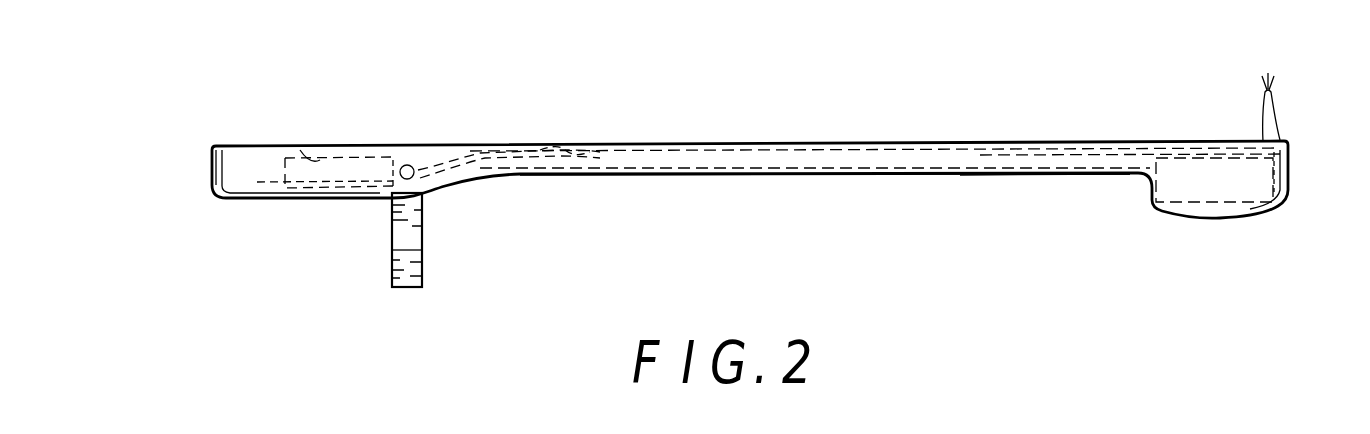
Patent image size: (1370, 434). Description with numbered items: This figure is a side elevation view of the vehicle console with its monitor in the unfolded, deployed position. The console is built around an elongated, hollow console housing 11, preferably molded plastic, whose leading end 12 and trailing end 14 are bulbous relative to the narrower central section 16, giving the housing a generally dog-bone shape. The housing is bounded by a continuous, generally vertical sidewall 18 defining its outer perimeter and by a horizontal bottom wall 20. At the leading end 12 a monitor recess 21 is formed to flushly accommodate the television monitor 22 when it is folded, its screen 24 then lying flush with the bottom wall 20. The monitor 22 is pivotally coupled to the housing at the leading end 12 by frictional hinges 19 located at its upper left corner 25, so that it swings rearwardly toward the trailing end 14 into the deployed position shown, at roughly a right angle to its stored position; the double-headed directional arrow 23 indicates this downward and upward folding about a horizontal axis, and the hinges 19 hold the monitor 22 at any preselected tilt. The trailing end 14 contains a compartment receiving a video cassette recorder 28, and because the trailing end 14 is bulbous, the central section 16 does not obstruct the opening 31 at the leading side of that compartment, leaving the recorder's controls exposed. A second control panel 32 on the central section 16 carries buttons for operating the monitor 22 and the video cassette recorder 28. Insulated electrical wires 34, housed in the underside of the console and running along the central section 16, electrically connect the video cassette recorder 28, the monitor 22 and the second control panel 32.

The console housing 11 is at (840, 143).
The leading end 12 is at (230, 196).
The trailing end 14 is at (1243, 221).
The central section 16 is at (853, 174).
The sidewall 18 is at (766, 161).
The hinges 19 is at (409, 164).
The bottom wall 20 is at (978, 178).
The monitor recess 21 is at (297, 146).
The television monitor 22 is at (423, 219).
The double-headed directional arrow 23 is at (380, 285).
The screen 24 is at (423, 257).
The upper left corner 25 is at (400, 164).
The video cassette recorder 28 is at (1208, 205).
The opening 31 is at (1141, 195).
The second control panel 32 is at (590, 174).
The insulated electrical wires 34 is at (486, 152).